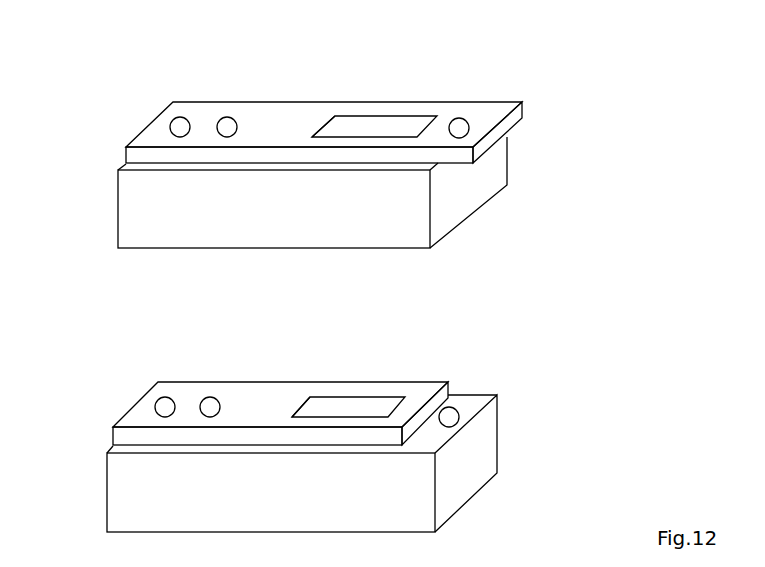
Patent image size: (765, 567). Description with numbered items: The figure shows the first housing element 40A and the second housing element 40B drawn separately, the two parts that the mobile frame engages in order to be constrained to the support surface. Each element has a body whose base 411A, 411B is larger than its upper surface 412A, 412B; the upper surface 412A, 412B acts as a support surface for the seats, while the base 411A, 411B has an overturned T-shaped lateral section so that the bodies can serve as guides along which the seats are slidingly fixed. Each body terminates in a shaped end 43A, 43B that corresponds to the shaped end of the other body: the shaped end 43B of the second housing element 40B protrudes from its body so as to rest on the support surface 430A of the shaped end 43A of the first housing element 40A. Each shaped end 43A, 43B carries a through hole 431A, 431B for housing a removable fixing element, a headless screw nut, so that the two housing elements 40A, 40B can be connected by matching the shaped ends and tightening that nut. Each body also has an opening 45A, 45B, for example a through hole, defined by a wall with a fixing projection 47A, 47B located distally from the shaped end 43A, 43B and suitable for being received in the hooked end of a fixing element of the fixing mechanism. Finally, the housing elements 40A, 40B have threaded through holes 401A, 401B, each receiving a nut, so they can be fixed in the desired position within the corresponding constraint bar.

The second housing element 40B is at (108, 150).
The base 411B is at (377, 210).
The upper surface 412B is at (158, 138).
The shaped end 43B is at (526, 99).
The threaded through hole 401B is at (223, 118).
The through hole 431B is at (455, 122).
The opening 45B is at (345, 128).
The fixing projection 47B is at (318, 127).
The first housing element 40A is at (96, 432).
The base 411A is at (467, 463).
The support surface 430A is at (472, 408).
The upper surface 412A is at (423, 393).
The shaped end 43A is at (472, 387).
The threaded through hole 401A is at (203, 400).
The opening 45A is at (348, 407).
The fixing projection 47A is at (302, 410).
The through hole 431A is at (457, 424).